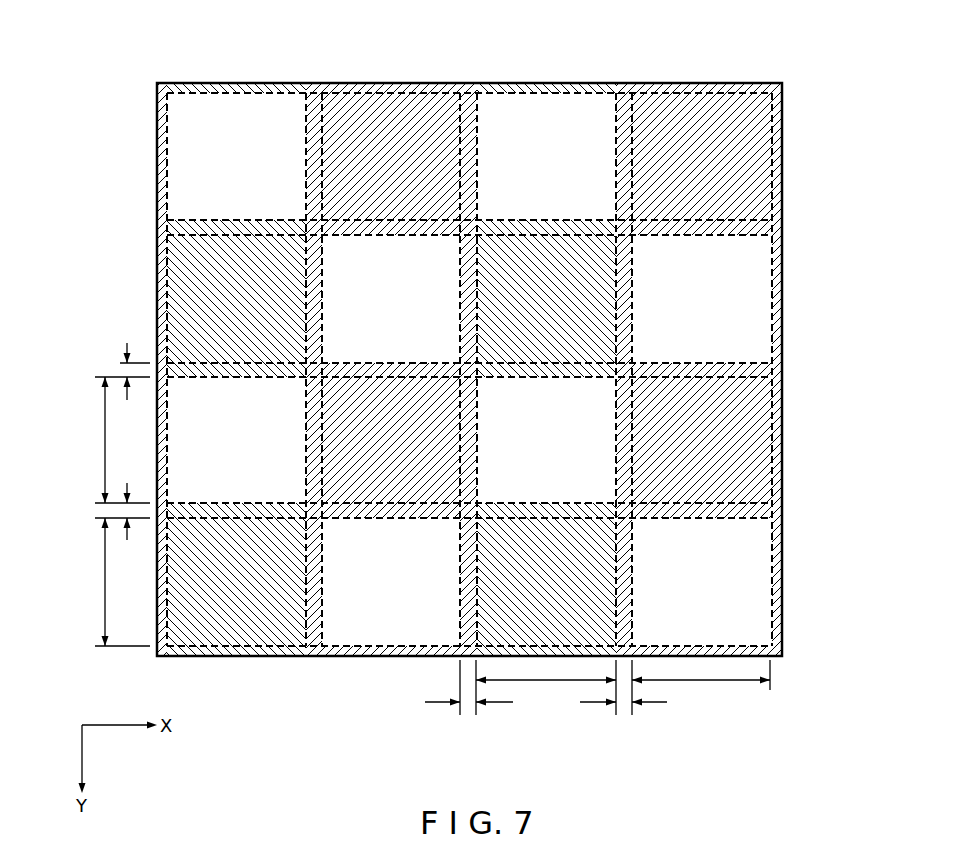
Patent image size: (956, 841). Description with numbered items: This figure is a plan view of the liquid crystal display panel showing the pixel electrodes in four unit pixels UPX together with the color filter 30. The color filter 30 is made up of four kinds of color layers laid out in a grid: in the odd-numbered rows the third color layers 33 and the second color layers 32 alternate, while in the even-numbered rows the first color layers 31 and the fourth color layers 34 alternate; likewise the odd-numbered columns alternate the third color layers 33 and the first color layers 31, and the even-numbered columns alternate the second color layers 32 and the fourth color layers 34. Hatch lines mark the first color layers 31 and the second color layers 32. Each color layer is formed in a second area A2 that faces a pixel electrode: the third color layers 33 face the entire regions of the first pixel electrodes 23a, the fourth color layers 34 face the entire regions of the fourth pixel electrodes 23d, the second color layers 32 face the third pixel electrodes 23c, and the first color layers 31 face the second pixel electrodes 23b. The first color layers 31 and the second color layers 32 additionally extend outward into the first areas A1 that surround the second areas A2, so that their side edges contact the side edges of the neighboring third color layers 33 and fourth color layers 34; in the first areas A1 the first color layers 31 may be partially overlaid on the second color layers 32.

The color filter 30 is at (800, 88).
The first color layers 31 is at (181, 247).
The second color layers 32 is at (326, 186).
The third color layers 33 is at (181, 104).
The fourth color layers 34 is at (332, 325).
The first pixel electrodes 23a is at (157, 122).
The second pixel electrodes 23b is at (157, 264).
The third pixel electrodes 23c is at (312, 205).
The fourth pixel electrodes 23d is at (322, 345).
The unit pixel UPX is at (478, 72).
The first areas A1 is at (121, 367).
The second areas A2 is at (103, 439).